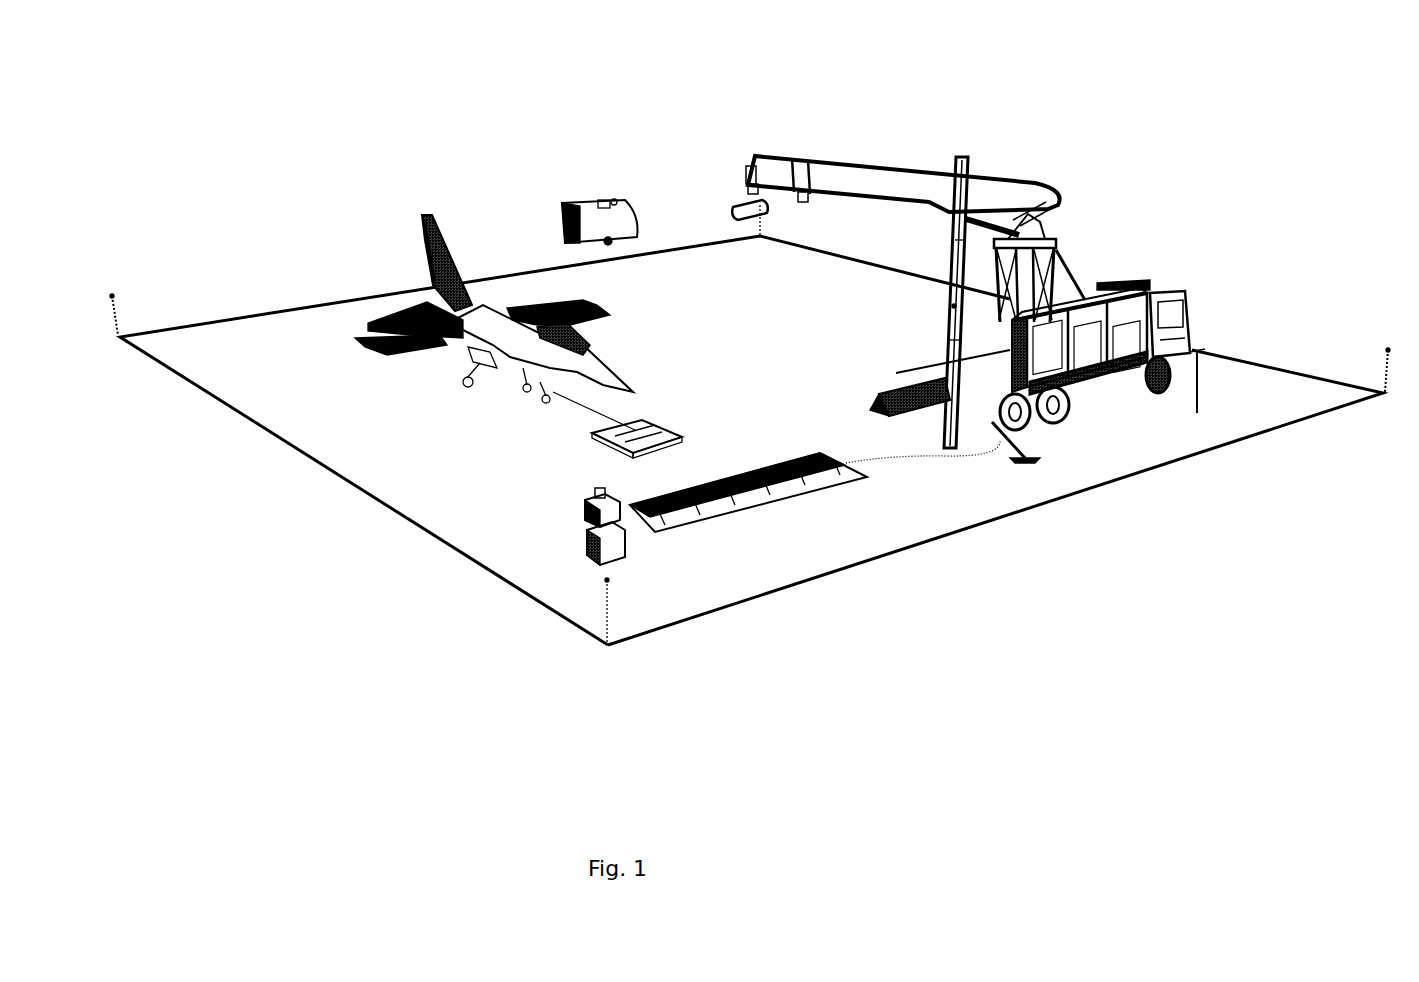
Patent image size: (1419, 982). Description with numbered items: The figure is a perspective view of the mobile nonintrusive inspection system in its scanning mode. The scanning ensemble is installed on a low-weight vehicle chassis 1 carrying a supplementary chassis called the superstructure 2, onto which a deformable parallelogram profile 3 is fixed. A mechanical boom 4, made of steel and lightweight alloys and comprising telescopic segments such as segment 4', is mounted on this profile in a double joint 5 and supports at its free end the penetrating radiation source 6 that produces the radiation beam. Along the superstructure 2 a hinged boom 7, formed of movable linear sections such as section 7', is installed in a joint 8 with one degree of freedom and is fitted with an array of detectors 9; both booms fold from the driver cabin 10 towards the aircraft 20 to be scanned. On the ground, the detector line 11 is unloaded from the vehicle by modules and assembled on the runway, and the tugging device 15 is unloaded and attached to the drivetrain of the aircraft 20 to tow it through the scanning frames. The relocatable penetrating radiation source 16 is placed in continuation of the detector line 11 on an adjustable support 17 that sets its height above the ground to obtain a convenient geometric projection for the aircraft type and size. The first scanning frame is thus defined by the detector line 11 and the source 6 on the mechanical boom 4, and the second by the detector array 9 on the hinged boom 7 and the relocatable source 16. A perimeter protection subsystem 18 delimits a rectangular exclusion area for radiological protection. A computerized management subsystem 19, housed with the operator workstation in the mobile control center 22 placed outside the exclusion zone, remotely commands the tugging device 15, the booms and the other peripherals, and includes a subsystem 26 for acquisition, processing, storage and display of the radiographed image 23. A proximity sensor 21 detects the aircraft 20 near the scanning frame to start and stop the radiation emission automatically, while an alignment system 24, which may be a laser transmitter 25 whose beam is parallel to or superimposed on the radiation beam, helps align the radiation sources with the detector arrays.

The vehicle chassis 1 is at (1147, 400).
The superstructure 2 is at (1097, 403).
The deformable parallelogram profile 3 is at (1067, 270).
The mechanical boom 4 is at (904, 180).
The telescopic segment 4' is at (805, 118).
The double joint 5 is at (1050, 245).
The penetrating radiation source 6 is at (728, 192).
The hinged boom 7 is at (973, 282).
The movable linear section 7' is at (930, 243).
The joint 8 is at (992, 452).
The array of detectors 9 is at (948, 306).
The driver cabin 10 is at (1176, 283).
The detector line (modular detection assembly) 11 is at (722, 515).
The tugging device 15 is at (672, 432).
The relocatable penetrating radiation source 16 is at (583, 532).
The adjustable support 17 is at (607, 522).
The perimeter protection subsystem 18 is at (123, 300).
The computerized management subsystem 19 is at (557, 208).
The aircraft 20 is at (395, 255).
The proximity sensor 21 is at (806, 190).
The mobile control center 22 is at (590, 196).
The radiographed image 23 is at (612, 196).
The alignment system 24 is at (742, 185).
The laser transmitter 25 is at (748, 172).
The subsystem for acquisition, processing, storage and display of the radiographed i 26 is at (600, 220).